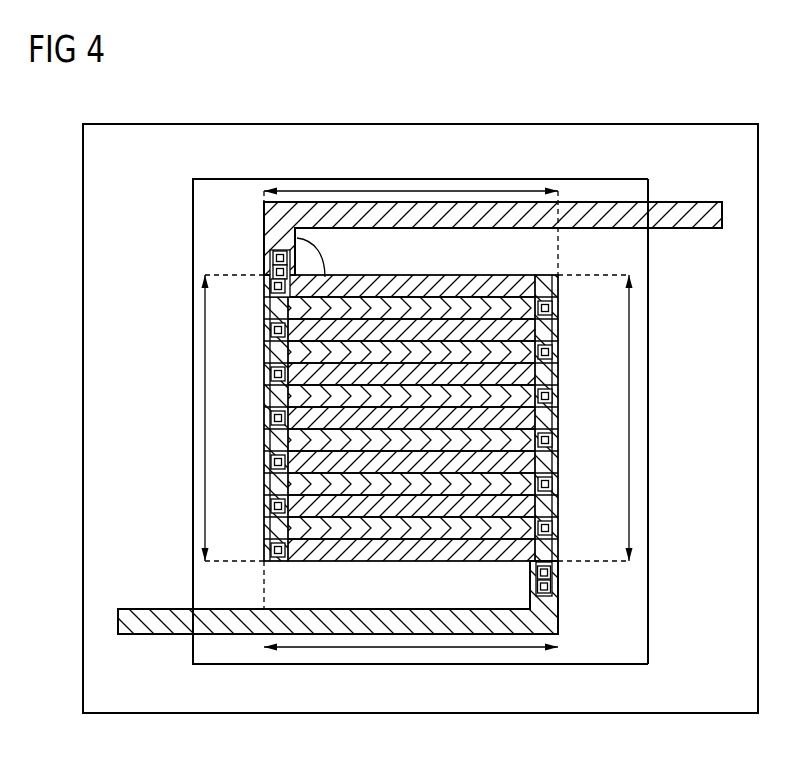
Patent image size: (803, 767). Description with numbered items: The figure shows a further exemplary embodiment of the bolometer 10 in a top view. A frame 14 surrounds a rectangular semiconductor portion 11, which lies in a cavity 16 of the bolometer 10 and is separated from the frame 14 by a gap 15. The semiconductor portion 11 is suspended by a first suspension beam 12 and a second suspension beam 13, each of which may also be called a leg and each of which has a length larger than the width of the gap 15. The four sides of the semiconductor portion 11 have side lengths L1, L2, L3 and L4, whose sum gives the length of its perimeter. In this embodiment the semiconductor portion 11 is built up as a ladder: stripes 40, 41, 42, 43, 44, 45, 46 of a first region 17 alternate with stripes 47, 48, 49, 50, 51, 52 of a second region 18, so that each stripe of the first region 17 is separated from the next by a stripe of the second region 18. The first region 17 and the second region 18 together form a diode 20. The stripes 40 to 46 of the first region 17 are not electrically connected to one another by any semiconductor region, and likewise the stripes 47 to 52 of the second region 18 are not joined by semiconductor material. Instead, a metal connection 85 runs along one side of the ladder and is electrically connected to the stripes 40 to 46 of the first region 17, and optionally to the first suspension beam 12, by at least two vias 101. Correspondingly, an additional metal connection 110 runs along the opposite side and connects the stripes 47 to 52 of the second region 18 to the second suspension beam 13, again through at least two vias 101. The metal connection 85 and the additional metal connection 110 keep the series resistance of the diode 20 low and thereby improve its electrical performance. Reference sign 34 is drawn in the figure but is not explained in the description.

The bolometer 10 is at (274, 116).
The semiconductor portion 11 is at (413, 418).
The first suspension beam 12 is at (590, 202).
The second suspension beam 13 is at (250, 634).
The frame 14 is at (83, 403).
The gap 15 is at (193, 460).
The cavity 16 is at (645, 473).
The first region 17 is at (272, 333).
The second region 18 is at (560, 340).
The diode 20 is at (490, 282).
The contact surface 34 is at (397, 220).
The stripe of the first region 40 is at (264, 250).
The stripe of the first region 41 is at (270, 345).
The stripe of the first region 42 is at (270, 372).
The stripe of the first region 43 is at (270, 430).
The stripe of the first region 44 is at (270, 472).
The stripe of the first region 45 is at (270, 504).
The stripe of the first region 46 is at (270, 548).
The stripe of the second region 47 is at (522, 310).
The stripe of the second region 48 is at (560, 356).
The stripe of the second region 49 is at (560, 396).
The stripe of the second region 50 is at (560, 440).
The stripe of the second region 51 is at (560, 484).
The stripe of the second region 52 is at (560, 528).
The metal connection 85 is at (275, 307).
The via 101 is at (287, 585).
The additional metal connection 110 is at (548, 572).
The side length L1 is at (483, 191).
The side length L2 is at (629, 402).
The side length L3 is at (410, 647).
The side length L4 is at (205, 407).